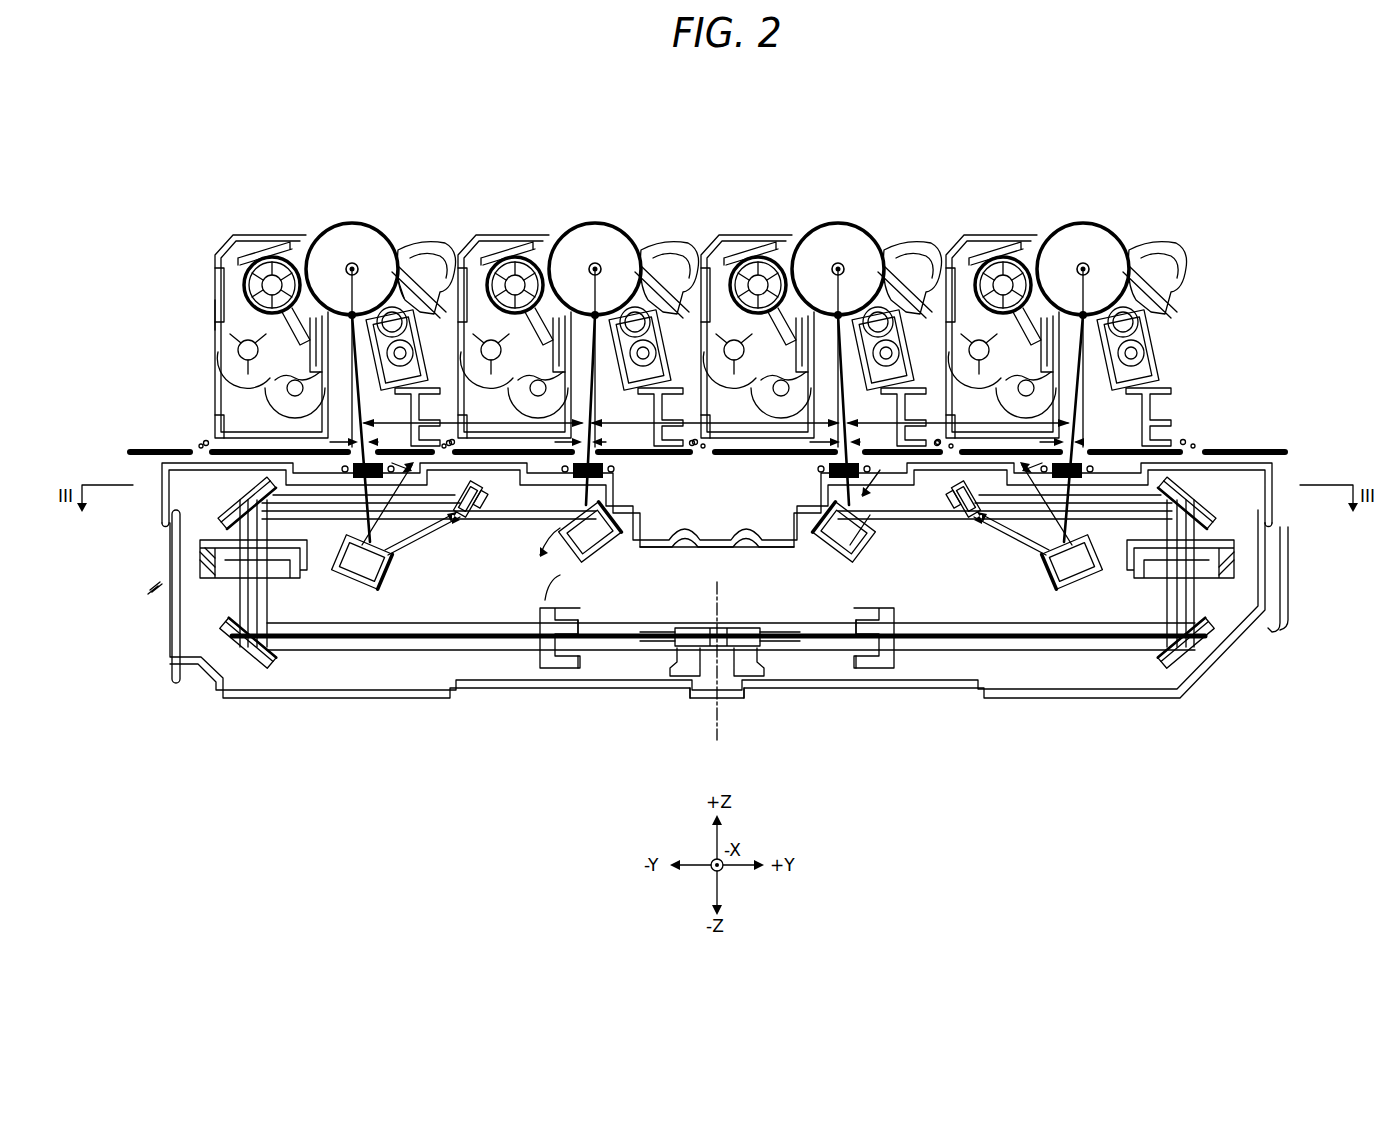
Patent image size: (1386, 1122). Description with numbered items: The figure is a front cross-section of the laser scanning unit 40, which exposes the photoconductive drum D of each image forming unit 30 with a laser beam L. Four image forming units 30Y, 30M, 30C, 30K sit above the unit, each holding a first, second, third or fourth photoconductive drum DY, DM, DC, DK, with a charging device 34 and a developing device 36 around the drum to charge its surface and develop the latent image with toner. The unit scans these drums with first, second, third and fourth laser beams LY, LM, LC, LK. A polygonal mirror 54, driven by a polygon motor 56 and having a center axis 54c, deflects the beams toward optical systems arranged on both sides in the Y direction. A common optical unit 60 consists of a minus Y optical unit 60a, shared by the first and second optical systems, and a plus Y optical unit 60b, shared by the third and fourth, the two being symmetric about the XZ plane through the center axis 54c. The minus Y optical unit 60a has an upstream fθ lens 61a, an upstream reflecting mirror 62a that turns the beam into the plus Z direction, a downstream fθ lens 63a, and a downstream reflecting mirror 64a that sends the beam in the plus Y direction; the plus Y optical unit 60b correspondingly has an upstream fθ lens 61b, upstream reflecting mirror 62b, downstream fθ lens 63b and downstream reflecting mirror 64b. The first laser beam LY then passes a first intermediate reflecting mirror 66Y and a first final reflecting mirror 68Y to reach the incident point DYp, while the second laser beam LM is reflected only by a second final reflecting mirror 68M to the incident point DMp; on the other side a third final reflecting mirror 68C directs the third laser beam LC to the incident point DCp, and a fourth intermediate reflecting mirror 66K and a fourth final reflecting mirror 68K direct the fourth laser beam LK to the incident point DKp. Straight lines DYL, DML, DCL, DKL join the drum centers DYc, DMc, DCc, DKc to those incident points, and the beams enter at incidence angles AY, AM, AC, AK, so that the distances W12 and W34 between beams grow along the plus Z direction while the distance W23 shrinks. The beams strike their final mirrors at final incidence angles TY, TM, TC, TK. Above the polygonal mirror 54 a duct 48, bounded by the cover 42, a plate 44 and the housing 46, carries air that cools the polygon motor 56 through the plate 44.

The image forming unit 30 is at (330, 344).
The first image forming unit 30Y is at (292, 131).
The second image forming unit 30M is at (534, 131).
The third image forming unit 30C is at (778, 131).
The fourth image forming unit 30K is at (1022, 131).
The photoconductive drum D is at (352, 281).
The first photoconductive drum DY is at (352, 262).
The second photoconductive drum DM is at (595, 262).
The third photoconductive drum DC is at (838, 262).
The fourth photoconductive drum DK is at (1083, 262).
The incident point of the first laser beam DYp is at (283, 262).
The incident point of the second laser beam DMp is at (526, 262).
The incident point of the third laser beam DCp is at (770, 262).
The incident point of the fourth laser beam DKp is at (1013, 262).
The center of the first photoconductive drum DYc is at (395, 338).
The center of the second photoconductive drum DMc is at (638, 338).
The center of the third photoconductive drum DCc is at (882, 338).
The center of the fourth photoconductive drum DKc is at (1128, 338).
The first straight line DYL is at (300, 242).
The second straight line DML is at (650, 330).
The third straight line DCL is at (786, 242).
The fourth straight line DKL is at (1140, 330).
The laser beam L is at (352, 396).
The first laser beam LY is at (396, 280).
The second laser beam LM is at (582, 330).
The third laser beam LC is at (858, 330).
The fourth laser beam LK is at (1072, 330).
The charging device 34 is at (436, 345).
The developing device 36 is at (214, 318).
The distance between first and second laser beams W12 is at (473, 411).
The distance between second and third laser beams W23 is at (715, 411).
The distance between third and fourth laser beams W34 is at (958, 411).
The first incidence angle AY is at (376, 442).
The second incidence angle AM is at (604, 442).
The third incidence angle AC is at (858, 442).
The fourth incidence angle AK is at (1116, 436).
The housing 46 is at (734, 456).
The duct 48 is at (700, 491).
The laser scanning unit 40 is at (160, 674).
The cover 42 is at (250, 699).
The plate 44 is at (727, 556).
The polygonal mirror 54 is at (690, 628).
The center axis of the polygonal mirror 54c is at (722, 722).
The polygon motor 56 is at (760, 660).
The common optical unit 60 is at (325, 612).
The minus Y optical unit 60a is at (112, 635).
The plus Y optical unit 60b is at (1332, 660).
The upstream fθ lens 61a is at (545, 655).
The upstream fθ lens 61b is at (905, 655).
The upstream reflecting mirror 62a is at (228, 628).
The upstream reflecting mirror 62b is at (1206, 628).
The downstream fθ lens 63a is at (210, 546).
The downstream fθ lens 63b is at (1224, 548).
The downstream reflecting mirror 64a is at (222, 520).
The downstream reflecting mirror 64b is at (1212, 520).
The first intermediate reflecting mirror 66Y is at (440, 485).
The fourth intermediate reflecting mirror 66K is at (994, 485).
The first final reflecting mirror 68Y is at (358, 585).
The second final reflecting mirror 68M is at (610, 560).
The third final reflecting mirror 68C is at (830, 560).
The fourth final reflecting mirror 68K is at (1078, 585).
The first final incidence angle TY is at (458, 540).
The second final incidence angle TM is at (540, 535).
The third final incidence angle TC is at (880, 515).
The fourth final incidence angle TK is at (1005, 545).